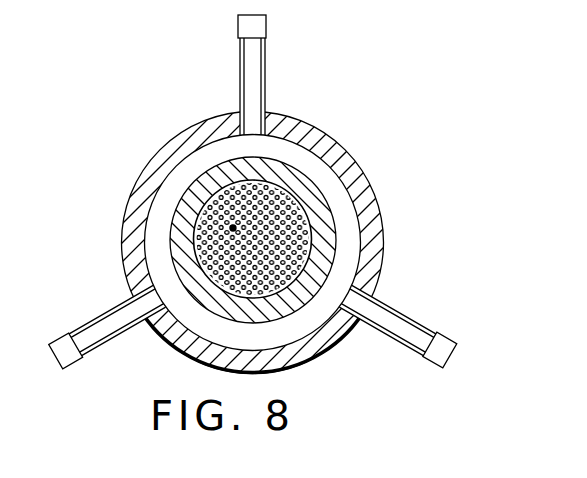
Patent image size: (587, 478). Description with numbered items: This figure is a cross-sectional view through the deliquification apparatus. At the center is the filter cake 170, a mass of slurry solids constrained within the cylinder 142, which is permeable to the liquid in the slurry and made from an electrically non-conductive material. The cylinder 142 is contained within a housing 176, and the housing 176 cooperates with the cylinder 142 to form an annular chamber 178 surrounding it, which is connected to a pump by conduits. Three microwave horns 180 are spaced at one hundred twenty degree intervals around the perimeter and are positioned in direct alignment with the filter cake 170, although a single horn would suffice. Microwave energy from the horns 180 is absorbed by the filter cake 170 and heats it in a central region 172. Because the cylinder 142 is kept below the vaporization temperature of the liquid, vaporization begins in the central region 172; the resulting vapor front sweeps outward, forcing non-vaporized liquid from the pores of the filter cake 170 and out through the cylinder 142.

The cylinder 142 is at (337, 232).
The filter cake 170 is at (297, 267).
The central region 172 is at (233, 228).
The housing 176 is at (128, 193).
The annular chamber 178 is at (305, 158).
The microwave horns 180 is at (266, 40).